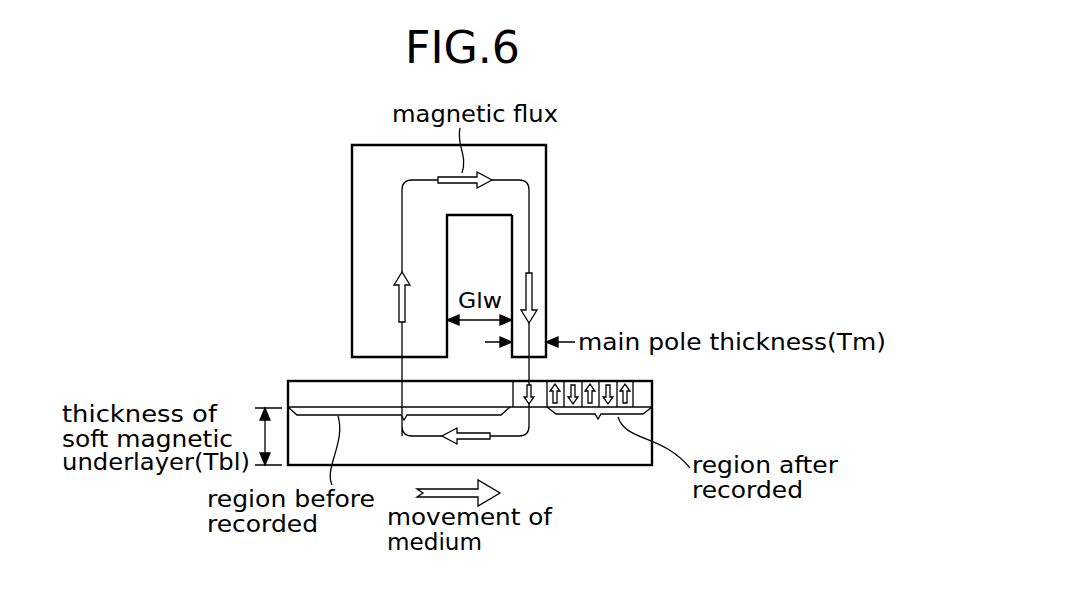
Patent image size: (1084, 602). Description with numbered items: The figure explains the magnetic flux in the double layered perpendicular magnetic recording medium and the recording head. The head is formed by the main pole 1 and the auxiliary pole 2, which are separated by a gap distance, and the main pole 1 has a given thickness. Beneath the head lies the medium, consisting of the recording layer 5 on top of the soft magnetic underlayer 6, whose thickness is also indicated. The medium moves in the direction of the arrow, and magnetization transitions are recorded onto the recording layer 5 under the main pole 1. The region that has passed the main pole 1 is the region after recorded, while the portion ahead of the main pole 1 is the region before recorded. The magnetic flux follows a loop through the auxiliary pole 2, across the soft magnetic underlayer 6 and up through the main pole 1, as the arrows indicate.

The main pole 1 is at (540, 273).
The auxiliary pole 2 is at (367, 238).
The recording layer 5 is at (315, 392).
The soft magnetic underlayer 6 is at (523, 452).